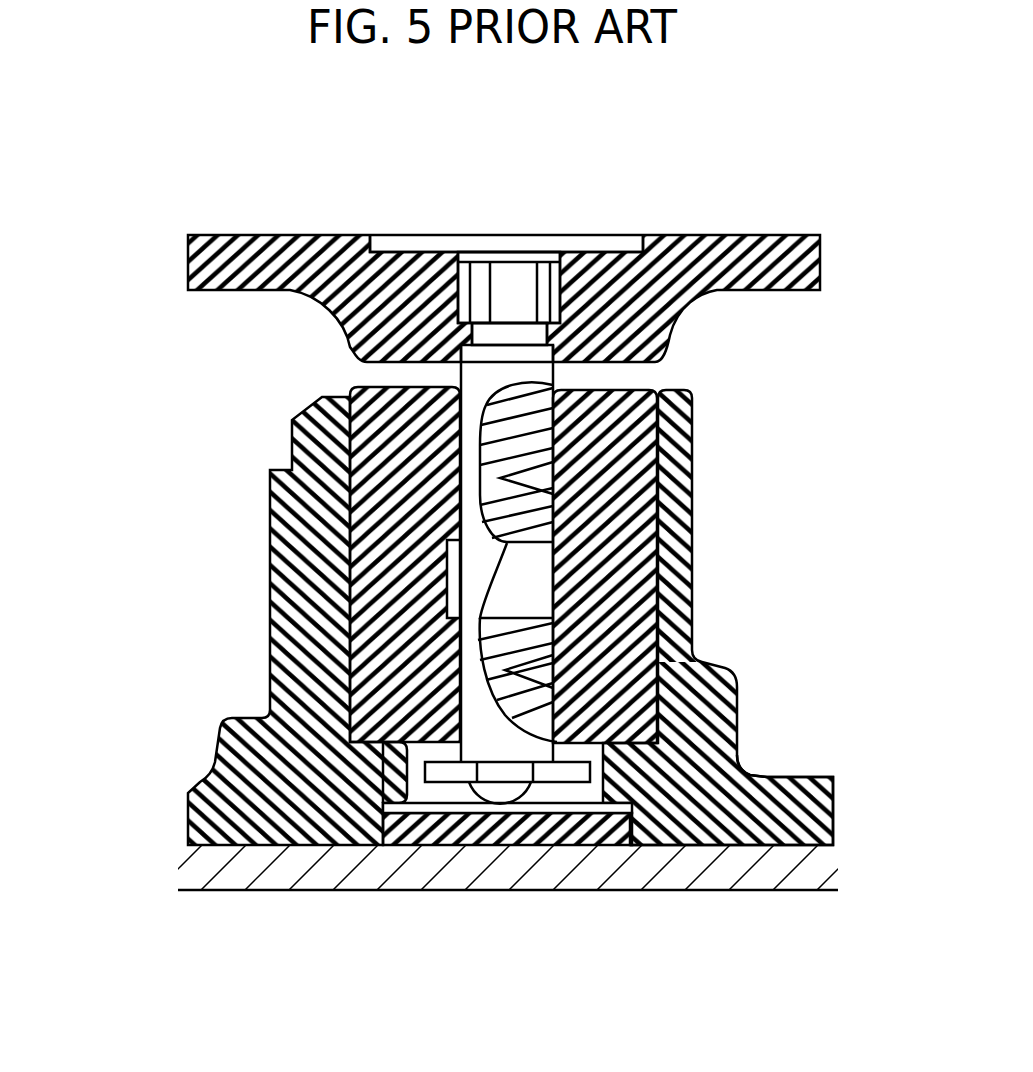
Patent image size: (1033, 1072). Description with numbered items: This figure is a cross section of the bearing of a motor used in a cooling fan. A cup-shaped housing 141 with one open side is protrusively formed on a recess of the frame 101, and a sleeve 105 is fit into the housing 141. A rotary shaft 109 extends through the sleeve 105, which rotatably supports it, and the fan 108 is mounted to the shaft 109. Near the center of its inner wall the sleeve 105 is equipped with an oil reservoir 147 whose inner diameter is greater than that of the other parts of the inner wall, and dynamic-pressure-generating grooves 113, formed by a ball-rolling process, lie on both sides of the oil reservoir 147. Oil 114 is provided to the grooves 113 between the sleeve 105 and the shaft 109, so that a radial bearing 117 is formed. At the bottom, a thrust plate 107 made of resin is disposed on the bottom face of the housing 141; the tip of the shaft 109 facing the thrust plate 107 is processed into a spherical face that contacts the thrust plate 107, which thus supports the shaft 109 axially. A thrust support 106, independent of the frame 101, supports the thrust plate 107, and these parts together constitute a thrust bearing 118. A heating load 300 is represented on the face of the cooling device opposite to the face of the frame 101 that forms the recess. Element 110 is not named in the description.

The frame 101 is at (188, 813).
The sleeve 105 is at (690, 786).
The thrust support 106 is at (583, 823).
The thrust plate 107 is at (597, 807).
The fan 108 is at (295, 253).
The rotary shaft 109 is at (505, 737).
The thrust washer 110 is at (452, 772).
The dynamic-pressure-generating grooves 113 is at (525, 417).
The oil 114 is at (455, 627).
The radial bearing 117 is at (573, 470).
The thrust bearing 118 is at (508, 812).
The housing 141 is at (308, 695).
The oil reservoir 147 is at (543, 584).
The heating load 300 is at (810, 868).